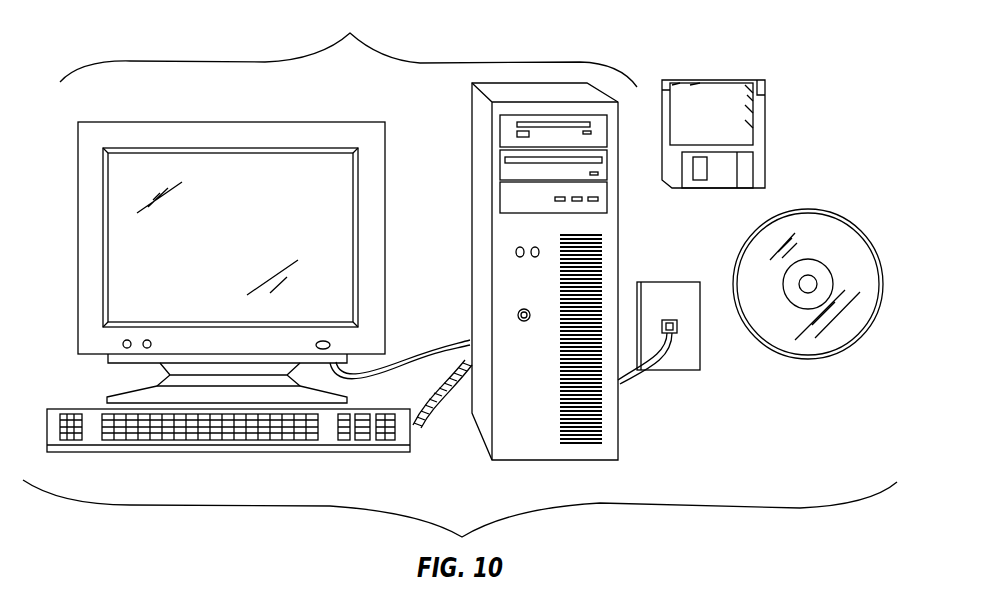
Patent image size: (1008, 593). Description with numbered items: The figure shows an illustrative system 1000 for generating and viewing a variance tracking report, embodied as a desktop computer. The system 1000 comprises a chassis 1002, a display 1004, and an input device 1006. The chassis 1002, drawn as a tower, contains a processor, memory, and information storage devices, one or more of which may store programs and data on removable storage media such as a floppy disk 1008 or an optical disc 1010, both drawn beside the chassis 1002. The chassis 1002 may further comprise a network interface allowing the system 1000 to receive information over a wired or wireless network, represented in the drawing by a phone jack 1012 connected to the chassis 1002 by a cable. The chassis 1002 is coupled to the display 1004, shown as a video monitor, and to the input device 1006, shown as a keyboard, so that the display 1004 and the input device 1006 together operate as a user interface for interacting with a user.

The system 1000 is at (460, 271).
The chassis 1002 is at (618, 433).
The display 1004 is at (232, 121).
The input device 1006 is at (230, 453).
The floppy disk 1008 is at (765, 135).
The optical disc 1010 is at (807, 358).
The phone jack 1012 is at (678, 372).